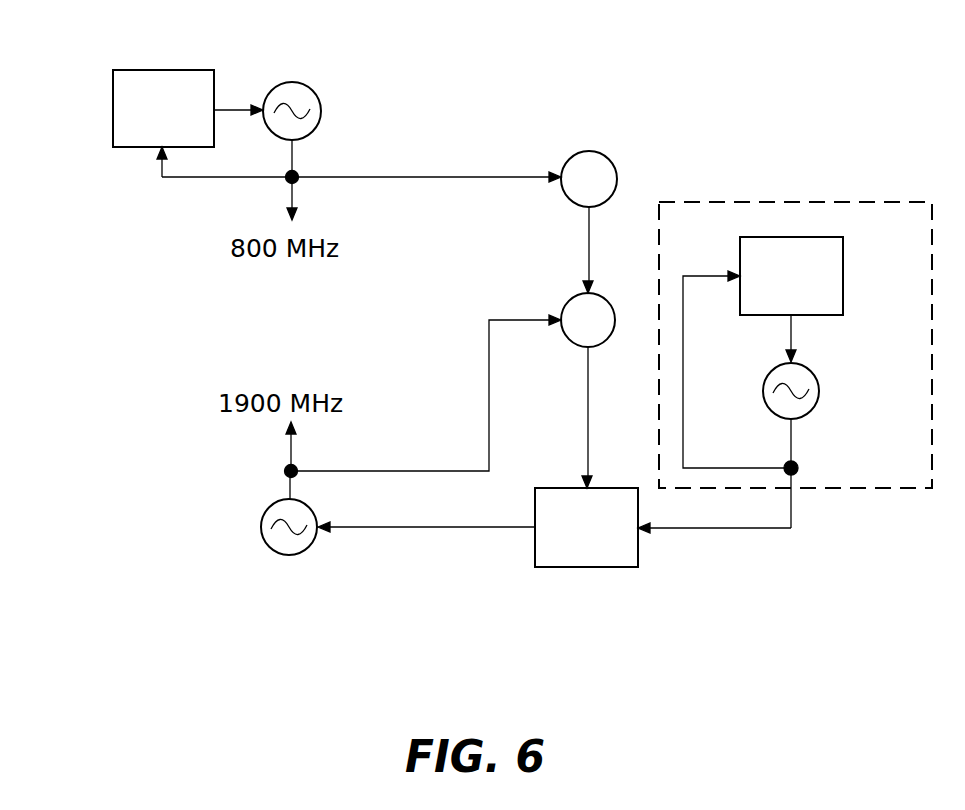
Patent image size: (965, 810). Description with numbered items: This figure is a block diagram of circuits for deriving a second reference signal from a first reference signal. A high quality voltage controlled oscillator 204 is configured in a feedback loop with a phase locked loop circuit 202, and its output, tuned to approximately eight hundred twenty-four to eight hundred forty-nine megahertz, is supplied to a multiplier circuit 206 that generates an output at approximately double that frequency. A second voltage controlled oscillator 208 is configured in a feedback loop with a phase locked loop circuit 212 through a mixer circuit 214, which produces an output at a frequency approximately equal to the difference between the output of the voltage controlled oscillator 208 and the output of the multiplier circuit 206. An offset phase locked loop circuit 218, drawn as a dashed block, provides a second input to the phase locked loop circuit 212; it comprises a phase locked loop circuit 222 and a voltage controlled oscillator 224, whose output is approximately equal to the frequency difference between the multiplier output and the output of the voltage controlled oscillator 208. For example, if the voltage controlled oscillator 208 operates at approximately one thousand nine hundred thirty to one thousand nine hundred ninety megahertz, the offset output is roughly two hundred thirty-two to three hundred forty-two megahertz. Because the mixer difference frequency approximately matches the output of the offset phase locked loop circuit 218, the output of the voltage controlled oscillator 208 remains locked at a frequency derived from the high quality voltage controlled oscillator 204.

The phase locked loop circuit 202 is at (163, 123).
The voltage controlled oscillator 204 is at (288, 83).
The multiplier circuit 206 is at (593, 150).
The voltage controlled oscillator 208 is at (301, 553).
The phase locked loop circuit 212 is at (586, 527).
The mixer circuit 214 is at (575, 298).
The offset phase locked loop circuit 218 is at (797, 201).
The phase locked loop circuit 222 is at (791, 276).
The voltage controlled oscillator 224 is at (819, 391).